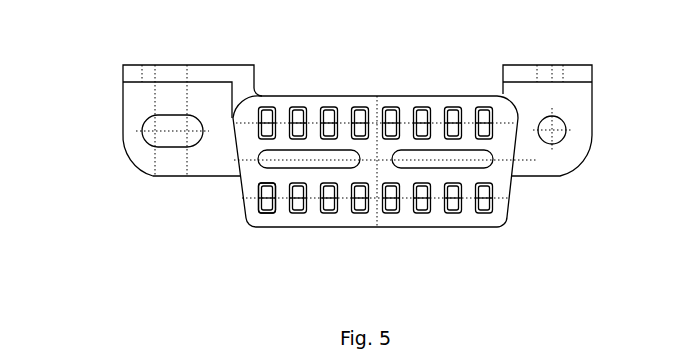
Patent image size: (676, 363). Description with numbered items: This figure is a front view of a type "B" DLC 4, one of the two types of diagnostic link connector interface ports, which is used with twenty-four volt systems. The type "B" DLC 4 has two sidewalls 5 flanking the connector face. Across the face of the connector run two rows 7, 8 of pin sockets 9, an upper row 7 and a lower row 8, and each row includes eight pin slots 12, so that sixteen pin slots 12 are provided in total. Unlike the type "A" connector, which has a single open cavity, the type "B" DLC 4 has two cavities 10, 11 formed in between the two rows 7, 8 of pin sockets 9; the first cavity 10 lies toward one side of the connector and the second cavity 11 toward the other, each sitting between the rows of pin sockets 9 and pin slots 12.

The type "B" DLC interface port 4 is at (143, 157).
The sidewall 5 is at (243, 187).
The first row of pin sockets 7 is at (247, 113).
The second row of pin sockets 8 is at (252, 214).
The pin socket 9 is at (268, 213).
The first cavity 10 is at (310, 161).
The second cavity 11 is at (470, 163).
The pin slot 12 is at (363, 214).